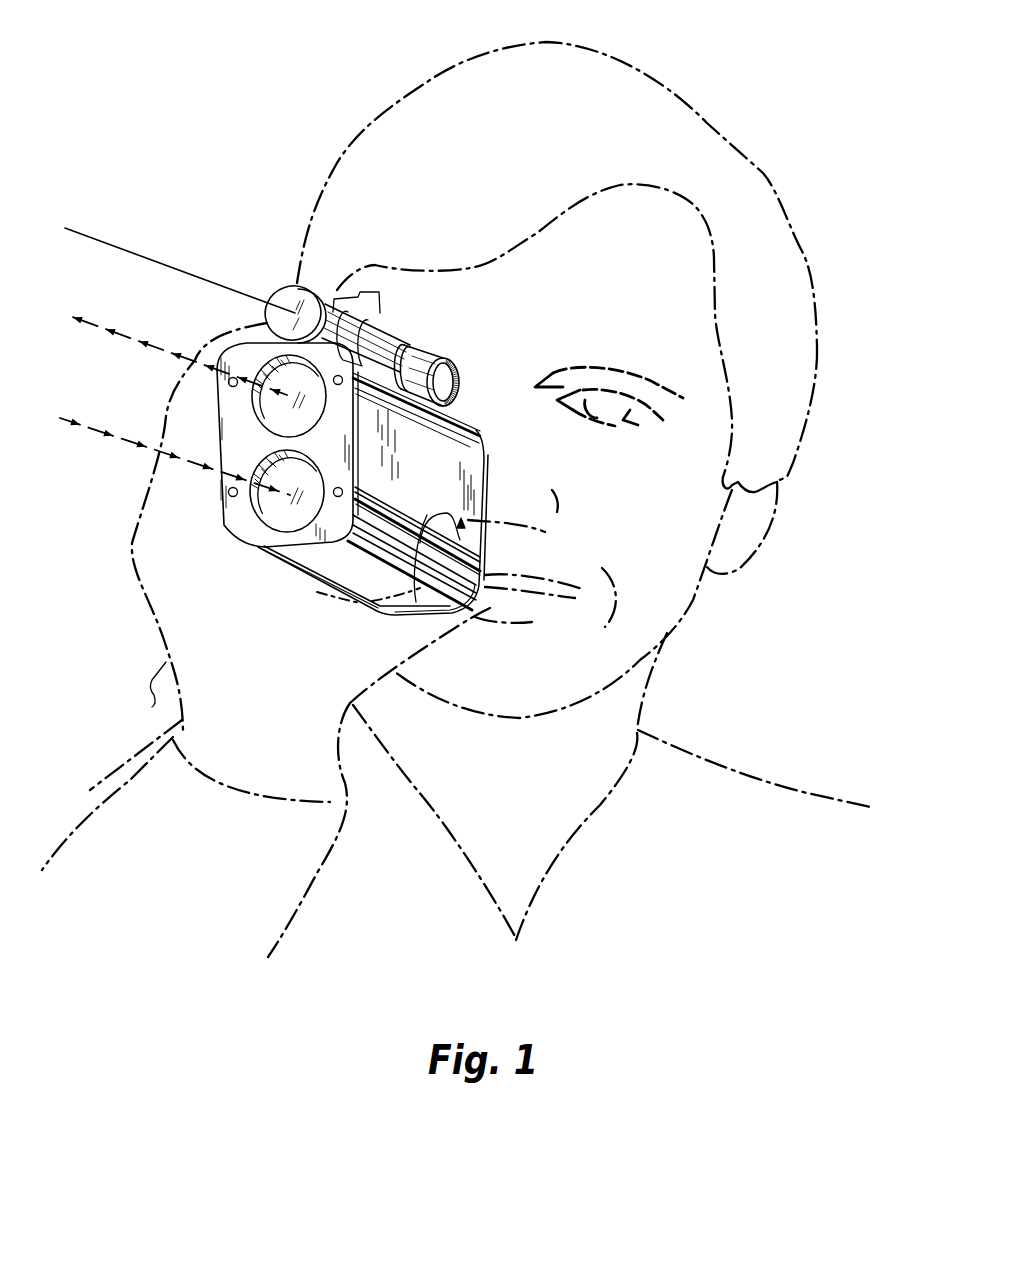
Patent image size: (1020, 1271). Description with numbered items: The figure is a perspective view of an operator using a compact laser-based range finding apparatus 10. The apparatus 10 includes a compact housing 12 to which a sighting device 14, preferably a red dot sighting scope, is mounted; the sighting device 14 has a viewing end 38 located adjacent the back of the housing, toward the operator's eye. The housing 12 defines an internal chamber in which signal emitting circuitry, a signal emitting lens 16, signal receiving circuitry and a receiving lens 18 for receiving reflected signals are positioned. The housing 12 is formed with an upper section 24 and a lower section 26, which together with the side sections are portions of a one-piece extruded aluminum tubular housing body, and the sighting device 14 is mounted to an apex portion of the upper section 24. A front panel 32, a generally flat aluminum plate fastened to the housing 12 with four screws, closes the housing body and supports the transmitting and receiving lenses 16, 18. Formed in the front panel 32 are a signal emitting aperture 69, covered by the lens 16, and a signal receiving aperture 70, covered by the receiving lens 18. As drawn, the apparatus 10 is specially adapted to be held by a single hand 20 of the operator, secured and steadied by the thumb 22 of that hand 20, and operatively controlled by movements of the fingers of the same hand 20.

The range finding apparatus 10 is at (473, 322).
The housing 12 is at (313, 565).
The sighting device 14 is at (362, 296).
The signal emitting lens 16 is at (290, 370).
The receiving lens 18 is at (275, 508).
The hand 20 is at (152, 707).
The thumb 22 is at (428, 618).
The upper section 24 is at (486, 430).
The lower section 26 is at (357, 582).
The front panel 32 is at (232, 438).
The viewing end 38 is at (448, 358).
The signal emitting aperture 69 is at (345, 442).
The signal receiving aperture 70 is at (318, 480).